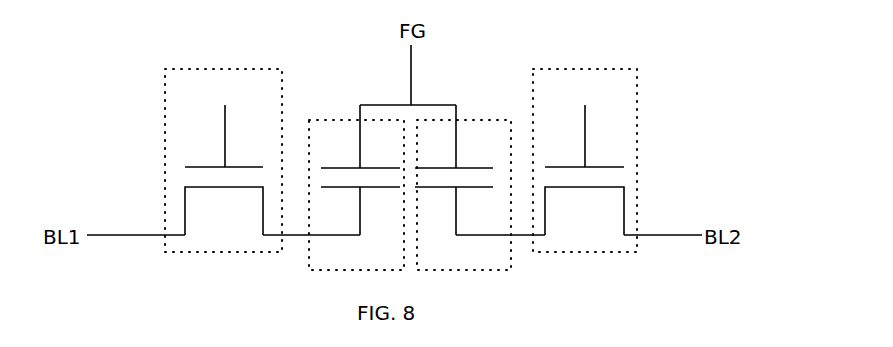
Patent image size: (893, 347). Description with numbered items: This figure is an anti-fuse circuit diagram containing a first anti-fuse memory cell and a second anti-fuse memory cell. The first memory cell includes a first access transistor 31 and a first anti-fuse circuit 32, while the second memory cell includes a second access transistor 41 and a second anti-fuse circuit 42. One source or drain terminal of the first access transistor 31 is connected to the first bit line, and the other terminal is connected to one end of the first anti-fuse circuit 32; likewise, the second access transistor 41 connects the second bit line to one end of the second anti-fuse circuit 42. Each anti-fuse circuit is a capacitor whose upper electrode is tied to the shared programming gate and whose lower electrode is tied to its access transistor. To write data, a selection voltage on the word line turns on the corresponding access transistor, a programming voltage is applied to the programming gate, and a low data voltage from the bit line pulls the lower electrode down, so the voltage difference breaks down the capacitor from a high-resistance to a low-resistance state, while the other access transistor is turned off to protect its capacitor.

The first access transistor 31 is at (165, 69).
The first anti-fuse circuit 32 is at (322, 120).
The second anti-fuse circuit 42 is at (507, 120).
The second access transistor 41 is at (637, 69).